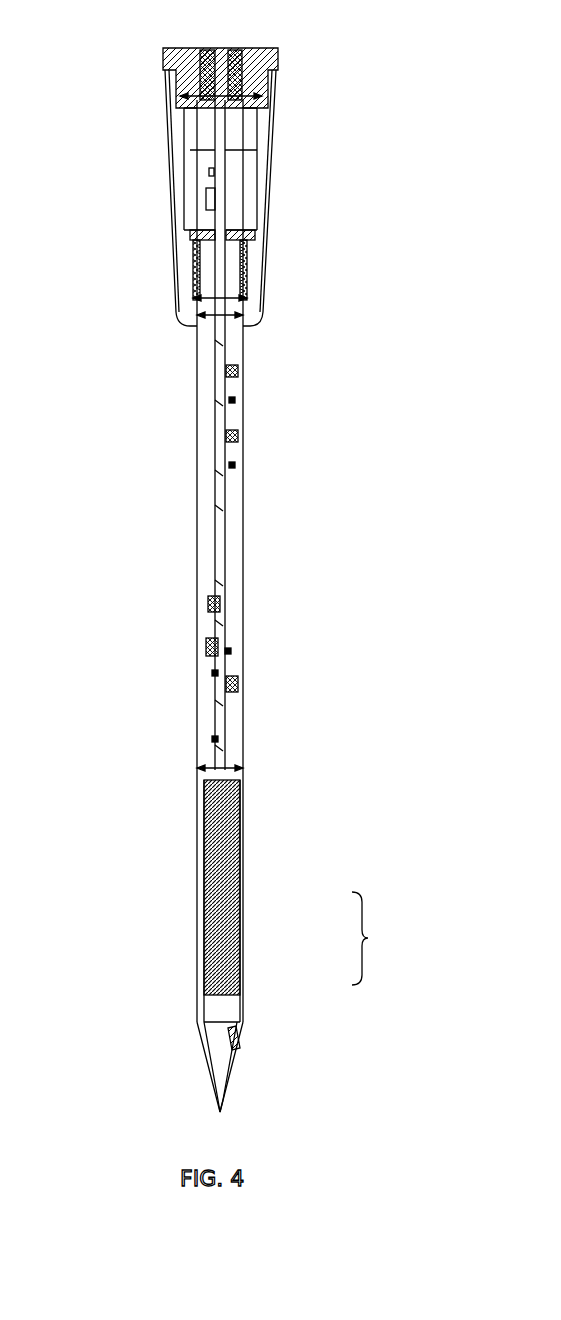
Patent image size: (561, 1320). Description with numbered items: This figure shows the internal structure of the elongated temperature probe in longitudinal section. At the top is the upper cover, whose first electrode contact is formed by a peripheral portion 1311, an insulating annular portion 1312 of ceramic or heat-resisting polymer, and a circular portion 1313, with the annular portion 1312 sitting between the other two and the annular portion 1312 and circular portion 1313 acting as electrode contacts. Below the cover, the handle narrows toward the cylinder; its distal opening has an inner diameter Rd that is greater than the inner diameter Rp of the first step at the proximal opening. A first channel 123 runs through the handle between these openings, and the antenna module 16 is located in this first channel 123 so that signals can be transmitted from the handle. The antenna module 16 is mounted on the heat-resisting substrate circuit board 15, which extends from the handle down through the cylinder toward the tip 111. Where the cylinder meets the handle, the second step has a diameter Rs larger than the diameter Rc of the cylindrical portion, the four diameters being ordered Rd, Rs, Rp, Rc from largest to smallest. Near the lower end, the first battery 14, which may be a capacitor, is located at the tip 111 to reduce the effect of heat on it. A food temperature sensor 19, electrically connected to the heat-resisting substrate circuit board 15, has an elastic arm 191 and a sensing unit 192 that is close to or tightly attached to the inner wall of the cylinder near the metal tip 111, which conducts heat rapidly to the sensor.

The peripheral portion 1311 is at (175, 62).
The annular portion 1312 is at (207, 58).
The circular portion 1313 is at (237, 52).
The inner diameter of the distal opening Rd is at (268, 100).
The first channel 123 is at (245, 178).
The antenna module 16 is at (213, 200).
The diameter of the second step Rs is at (248, 285).
The inner diameter of the first step Rp is at (247, 318).
The heat-resisting substrate circuit board 15 is at (200, 560).
The diameter of the cylindrical portion Rc is at (222, 770).
The first battery 14 is at (203, 912).
The elastic arm 191 is at (243, 940).
The sensing unit 192 is at (240, 1036).
The food temperature sensor 19 is at (413, 938).
The tip 111 is at (213, 1085).